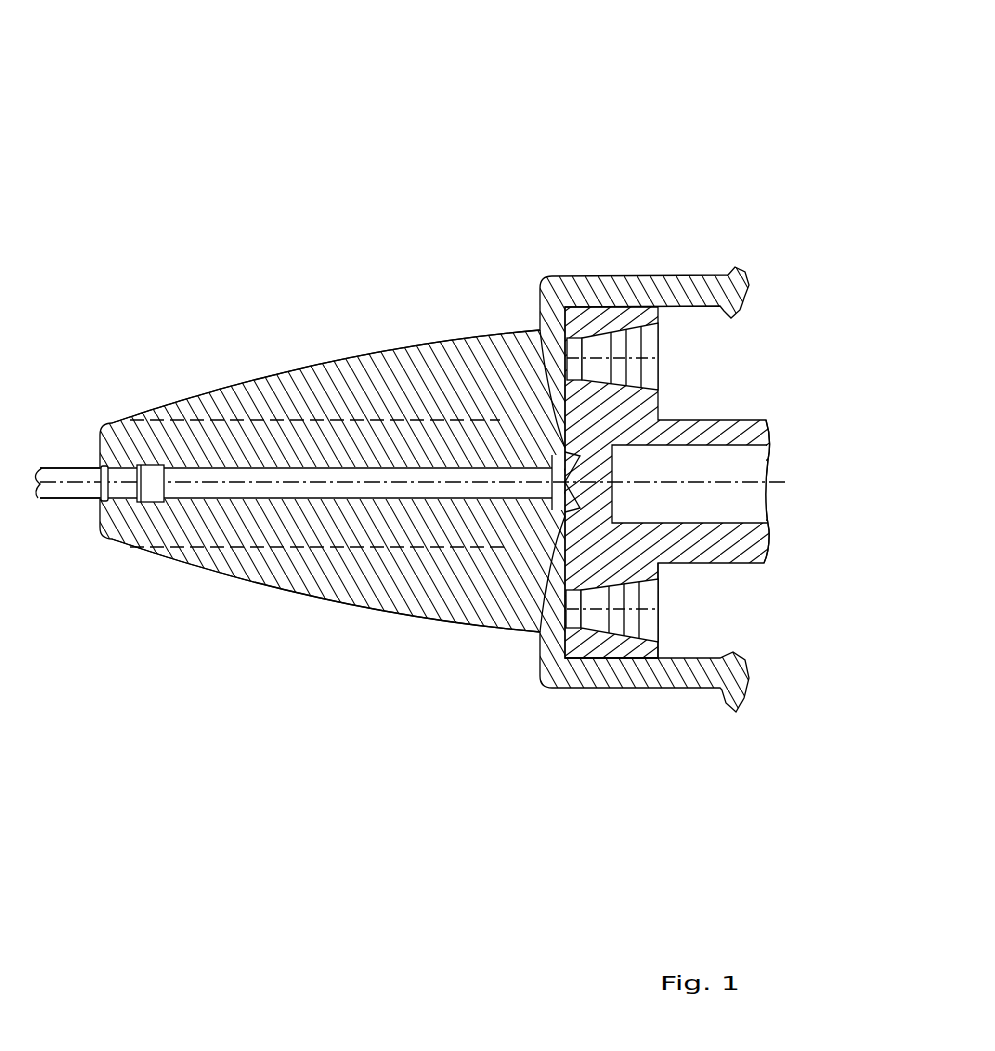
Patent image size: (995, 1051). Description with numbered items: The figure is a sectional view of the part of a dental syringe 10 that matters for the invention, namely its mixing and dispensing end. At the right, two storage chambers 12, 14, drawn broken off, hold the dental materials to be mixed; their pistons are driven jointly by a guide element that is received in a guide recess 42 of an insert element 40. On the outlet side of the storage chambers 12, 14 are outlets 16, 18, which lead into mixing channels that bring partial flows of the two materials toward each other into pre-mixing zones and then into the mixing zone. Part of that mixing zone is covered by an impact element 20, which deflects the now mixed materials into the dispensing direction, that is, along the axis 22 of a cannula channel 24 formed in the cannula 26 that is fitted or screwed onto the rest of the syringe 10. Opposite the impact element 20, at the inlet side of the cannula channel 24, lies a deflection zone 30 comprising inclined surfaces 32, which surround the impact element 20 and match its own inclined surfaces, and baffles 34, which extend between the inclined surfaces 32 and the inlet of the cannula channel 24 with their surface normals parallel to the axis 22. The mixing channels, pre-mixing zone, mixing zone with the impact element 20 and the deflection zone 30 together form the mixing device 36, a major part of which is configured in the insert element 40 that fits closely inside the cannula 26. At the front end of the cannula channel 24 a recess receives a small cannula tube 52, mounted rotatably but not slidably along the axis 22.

The syringe 10 is at (495, 105).
The storage chamber 12 is at (710, 366).
The storage chamber 14 is at (718, 612).
The outlet 16 is at (604, 350).
The outlet 18 is at (597, 612).
The impact element 20 is at (553, 533).
The axis 22 is at (177, 478).
The cannula channel 24 is at (227, 486).
The cannula 26 is at (373, 527).
The deflection zone 30 is at (538, 380).
The inclined surfaces 32 is at (500, 417).
The baffles 34 is at (385, 420).
The mixing device 36 is at (556, 545).
The insert element 40 is at (733, 550).
The guide recess 42 is at (722, 472).
The small cannula tube 52 is at (63, 487).